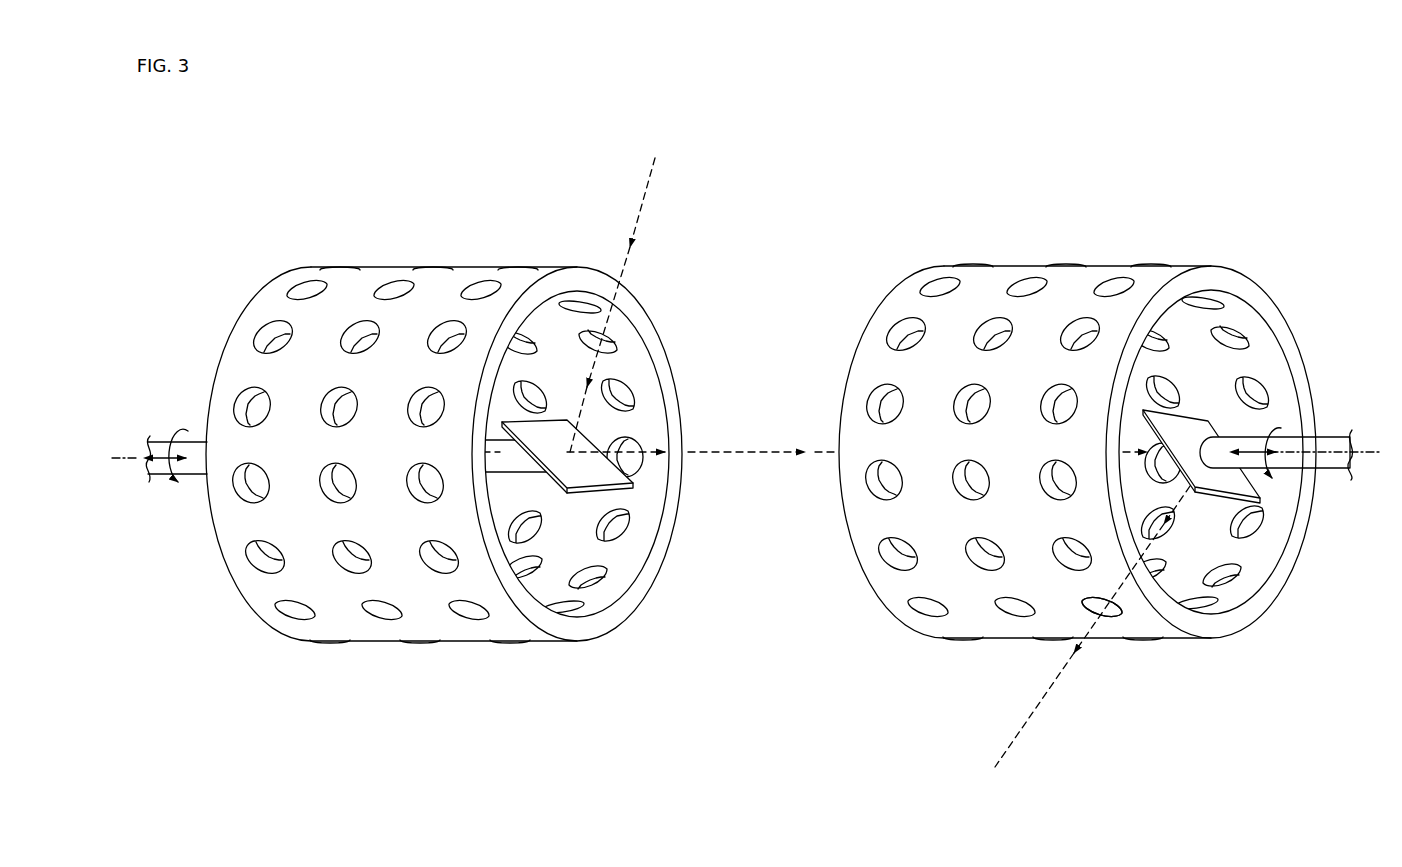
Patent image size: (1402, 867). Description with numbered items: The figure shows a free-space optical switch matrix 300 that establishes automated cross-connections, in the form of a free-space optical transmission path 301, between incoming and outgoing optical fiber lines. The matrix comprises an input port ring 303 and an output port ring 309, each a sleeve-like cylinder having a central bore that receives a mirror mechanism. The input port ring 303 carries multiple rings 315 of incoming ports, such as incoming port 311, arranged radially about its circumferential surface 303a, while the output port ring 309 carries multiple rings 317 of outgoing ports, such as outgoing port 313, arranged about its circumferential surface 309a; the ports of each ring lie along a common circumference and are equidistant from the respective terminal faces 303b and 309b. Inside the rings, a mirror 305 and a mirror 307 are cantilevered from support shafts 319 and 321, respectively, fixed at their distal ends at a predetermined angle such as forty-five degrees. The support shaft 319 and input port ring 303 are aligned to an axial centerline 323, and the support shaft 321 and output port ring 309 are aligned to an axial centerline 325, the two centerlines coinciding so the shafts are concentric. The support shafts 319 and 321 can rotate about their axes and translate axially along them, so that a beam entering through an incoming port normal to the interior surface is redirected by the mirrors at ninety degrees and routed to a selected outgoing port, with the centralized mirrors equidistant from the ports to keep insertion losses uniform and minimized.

The free-space optical switch matrix 300 is at (780, 162).
The free-space optical transmission path 301 is at (640, 211).
The input port ring 303 is at (473, 462).
The circumferential surface 303a is at (272, 295).
The terminal face 303b is at (645, 323).
The mirror 305 is at (583, 490).
The mirror 307 is at (1178, 428).
The output port ring 309 is at (1109, 463).
The circumferential surface 309a is at (903, 293).
The terminal face 309b is at (1250, 293).
The incoming port 311 is at (616, 346).
The outgoing port 313 is at (1108, 620).
The rings of incoming ports 315 is at (508, 654).
The rings of outgoing ports 317 is at (1148, 259).
The support shaft 319 is at (196, 462).
The support shaft 321 is at (1330, 470).
The axial centerline 323 is at (130, 455).
The axial centerline 325 is at (1370, 452).